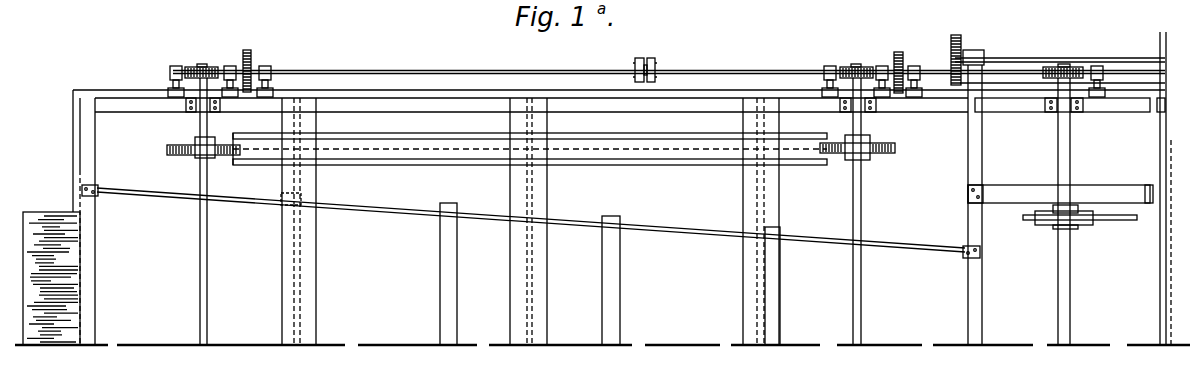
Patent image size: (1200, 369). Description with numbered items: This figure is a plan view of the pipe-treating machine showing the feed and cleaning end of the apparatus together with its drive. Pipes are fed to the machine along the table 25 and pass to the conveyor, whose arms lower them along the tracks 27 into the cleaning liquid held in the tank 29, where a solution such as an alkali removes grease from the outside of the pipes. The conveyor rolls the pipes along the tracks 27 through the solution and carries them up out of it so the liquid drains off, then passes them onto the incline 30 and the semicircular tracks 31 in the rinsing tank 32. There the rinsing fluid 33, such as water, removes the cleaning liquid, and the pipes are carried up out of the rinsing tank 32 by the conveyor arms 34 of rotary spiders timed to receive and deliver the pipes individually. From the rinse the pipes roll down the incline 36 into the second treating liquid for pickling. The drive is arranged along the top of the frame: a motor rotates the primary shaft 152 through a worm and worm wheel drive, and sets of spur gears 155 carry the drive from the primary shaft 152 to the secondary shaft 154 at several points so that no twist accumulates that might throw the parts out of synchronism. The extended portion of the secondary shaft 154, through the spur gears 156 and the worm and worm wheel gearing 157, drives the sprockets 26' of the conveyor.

The table 25 is at (52, 223).
The sprockets 26' is at (531, 168).
The tracks 27 is at (165, 197).
The tank 29 is at (127, 110).
The incline 30 is at (964, 260).
The semicircular tracks 31 is at (1002, 193).
The rinsing tank 32 is at (1107, 102).
The rinsing fluid 33 is at (1050, 226).
The conveyor arms 34 is at (1117, 220).
The incline 36 is at (1152, 190).
The primary shaft 152 is at (1068, 58).
The secondary shaft 154 is at (468, 72).
The spur gears 155 is at (958, 40).
The spur gears 156 is at (250, 58).
The worm and worm wheel gearing 157 is at (196, 67).